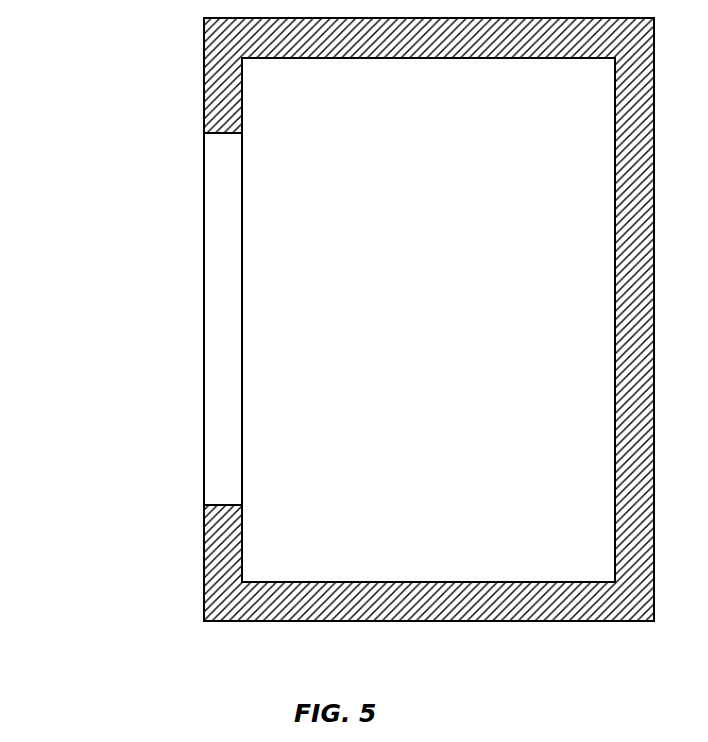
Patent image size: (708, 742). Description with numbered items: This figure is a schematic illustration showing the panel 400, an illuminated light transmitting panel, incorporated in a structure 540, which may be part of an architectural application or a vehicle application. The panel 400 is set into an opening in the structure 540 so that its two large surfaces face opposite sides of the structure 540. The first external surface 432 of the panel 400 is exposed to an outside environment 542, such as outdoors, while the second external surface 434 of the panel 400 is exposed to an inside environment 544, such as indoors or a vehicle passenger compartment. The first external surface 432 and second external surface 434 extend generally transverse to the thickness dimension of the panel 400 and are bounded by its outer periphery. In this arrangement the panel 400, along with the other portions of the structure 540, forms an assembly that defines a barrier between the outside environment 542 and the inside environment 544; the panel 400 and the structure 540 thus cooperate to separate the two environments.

The structure 540 is at (89, 79).
The panel 400 is at (169, 201).
The outside environment 542 is at (444, 330).
The inside environment 544 is at (105, 330).
The first external surface 432 is at (203, 430).
The second external surface 434 is at (242, 471).